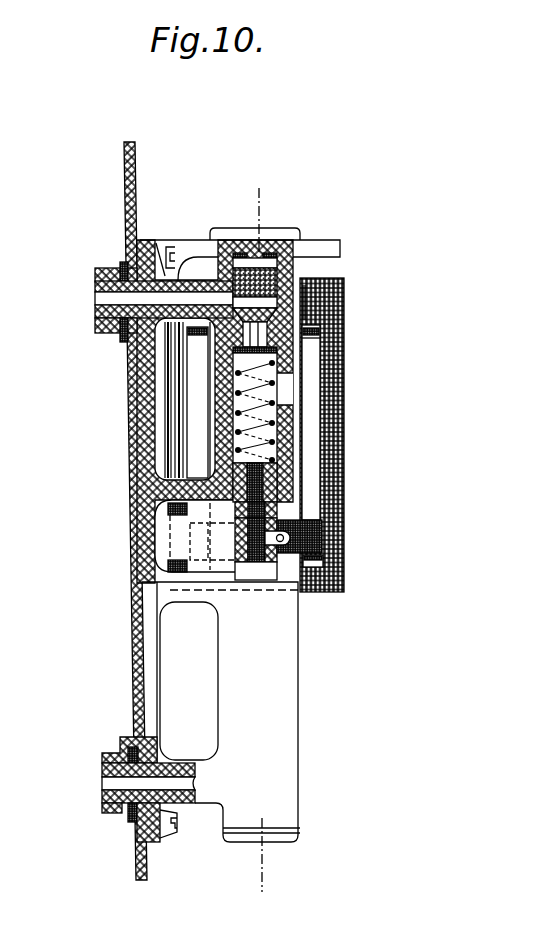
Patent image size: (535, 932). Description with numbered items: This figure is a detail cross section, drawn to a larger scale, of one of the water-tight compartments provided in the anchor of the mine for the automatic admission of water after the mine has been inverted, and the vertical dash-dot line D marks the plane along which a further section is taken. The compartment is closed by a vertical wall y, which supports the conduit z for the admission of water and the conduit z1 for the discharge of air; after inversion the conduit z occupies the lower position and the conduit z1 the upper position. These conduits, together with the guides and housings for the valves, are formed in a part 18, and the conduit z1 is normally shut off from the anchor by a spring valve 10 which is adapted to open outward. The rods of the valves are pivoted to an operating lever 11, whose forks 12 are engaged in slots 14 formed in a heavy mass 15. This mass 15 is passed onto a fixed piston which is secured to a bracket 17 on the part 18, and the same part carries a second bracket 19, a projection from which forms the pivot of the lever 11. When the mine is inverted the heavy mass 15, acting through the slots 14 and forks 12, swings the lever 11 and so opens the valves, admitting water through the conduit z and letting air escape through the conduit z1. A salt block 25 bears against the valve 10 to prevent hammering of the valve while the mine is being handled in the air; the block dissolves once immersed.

The spring valve 10 is at (263, 313).
The operating lever 11 is at (278, 559).
The fork of the operating lever 12 is at (312, 536).
The slot 14 is at (198, 412).
The heavy mass 15 is at (175, 377).
The bracket 17 is at (316, 250).
The part carrying conduits and valve housings 18 is at (148, 463).
The bracket 19 is at (187, 535).
The salt block 25 is at (292, 271).
The vertical wall y is at (132, 655).
The conduit for admission of water z is at (112, 782).
The conduit for discharge of air z1 is at (128, 297).
The section line D— D is at (272, 540).